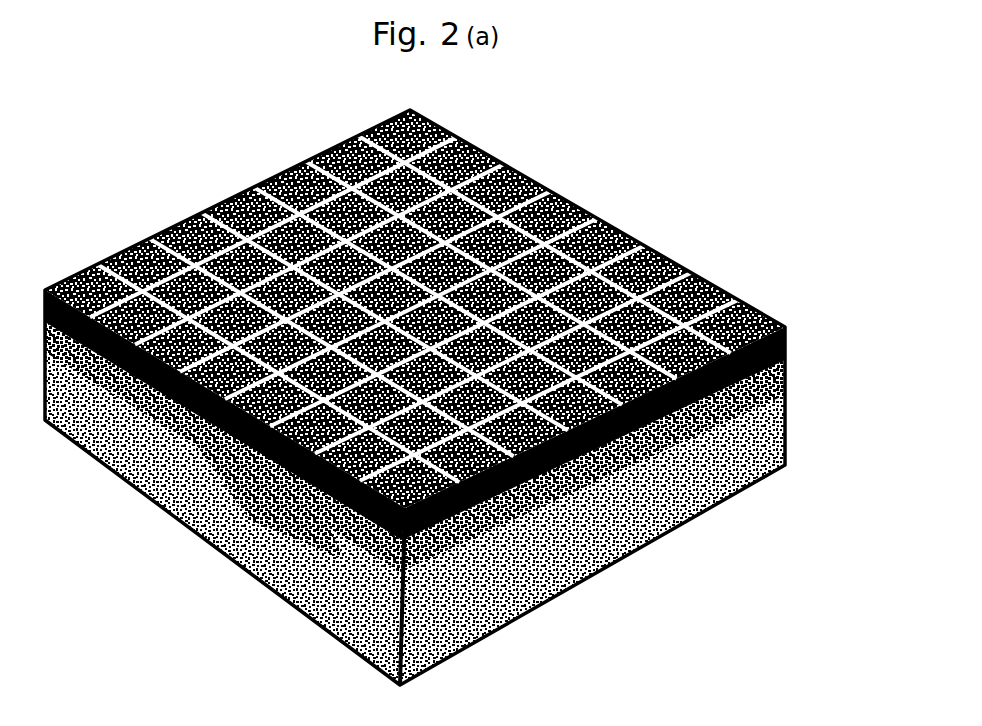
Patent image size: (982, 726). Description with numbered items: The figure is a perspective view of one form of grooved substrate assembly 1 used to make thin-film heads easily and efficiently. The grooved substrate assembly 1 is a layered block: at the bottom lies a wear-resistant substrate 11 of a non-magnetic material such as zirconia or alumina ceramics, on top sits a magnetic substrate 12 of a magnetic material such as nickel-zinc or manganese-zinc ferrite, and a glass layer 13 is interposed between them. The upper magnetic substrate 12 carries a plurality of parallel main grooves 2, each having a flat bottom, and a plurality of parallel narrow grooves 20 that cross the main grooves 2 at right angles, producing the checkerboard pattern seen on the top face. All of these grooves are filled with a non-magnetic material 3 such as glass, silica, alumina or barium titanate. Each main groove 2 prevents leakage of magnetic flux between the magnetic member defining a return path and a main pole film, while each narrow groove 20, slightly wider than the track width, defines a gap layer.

The grooved substrate assembly 1 is at (760, 492).
The main groove 2 is at (330, 555).
The non-magnetic material 3 is at (683, 272).
The wear-resistant substrate 11 is at (787, 408).
The magnetic substrate 12 is at (787, 347).
The glass layer 13 is at (787, 382).
The narrow groove 20 is at (550, 560).